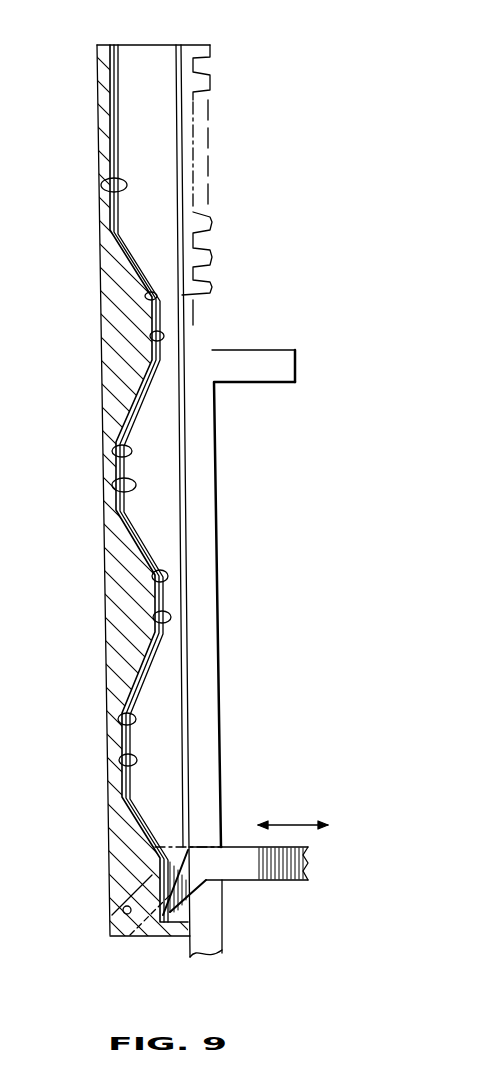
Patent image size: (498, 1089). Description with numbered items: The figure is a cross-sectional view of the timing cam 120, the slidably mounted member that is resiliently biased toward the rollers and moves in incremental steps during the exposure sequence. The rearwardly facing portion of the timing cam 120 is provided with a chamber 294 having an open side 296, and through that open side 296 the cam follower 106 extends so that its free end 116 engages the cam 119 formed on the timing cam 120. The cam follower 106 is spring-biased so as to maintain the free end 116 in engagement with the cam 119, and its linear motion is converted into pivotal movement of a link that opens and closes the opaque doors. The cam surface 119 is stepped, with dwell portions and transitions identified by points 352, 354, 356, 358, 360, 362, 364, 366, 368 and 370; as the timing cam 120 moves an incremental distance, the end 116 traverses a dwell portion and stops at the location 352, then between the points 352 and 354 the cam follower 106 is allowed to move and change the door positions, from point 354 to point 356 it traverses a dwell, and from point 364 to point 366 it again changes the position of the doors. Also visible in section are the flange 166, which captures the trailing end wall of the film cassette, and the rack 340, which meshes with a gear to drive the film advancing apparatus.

The cam follower 106 is at (280, 880).
The free end 116 is at (137, 935).
The cam 119 is at (157, 700).
The timing cam 120 is at (125, 908).
The flange 166 is at (275, 365).
The chamber 294 is at (160, 500).
The open side 296 is at (228, 637).
The rack 340 is at (242, 215).
The point 352 is at (158, 862).
The point 354 is at (120, 762).
The point 356 is at (120, 718).
The coil ring 358 is at (157, 618).
The coil ring 360 is at (152, 578).
The coil ring 362 is at (114, 489).
The point 364 is at (114, 455).
The point 366 is at (150, 331).
The coil ring 368 is at (133, 287).
The coil ring 370 is at (104, 183).